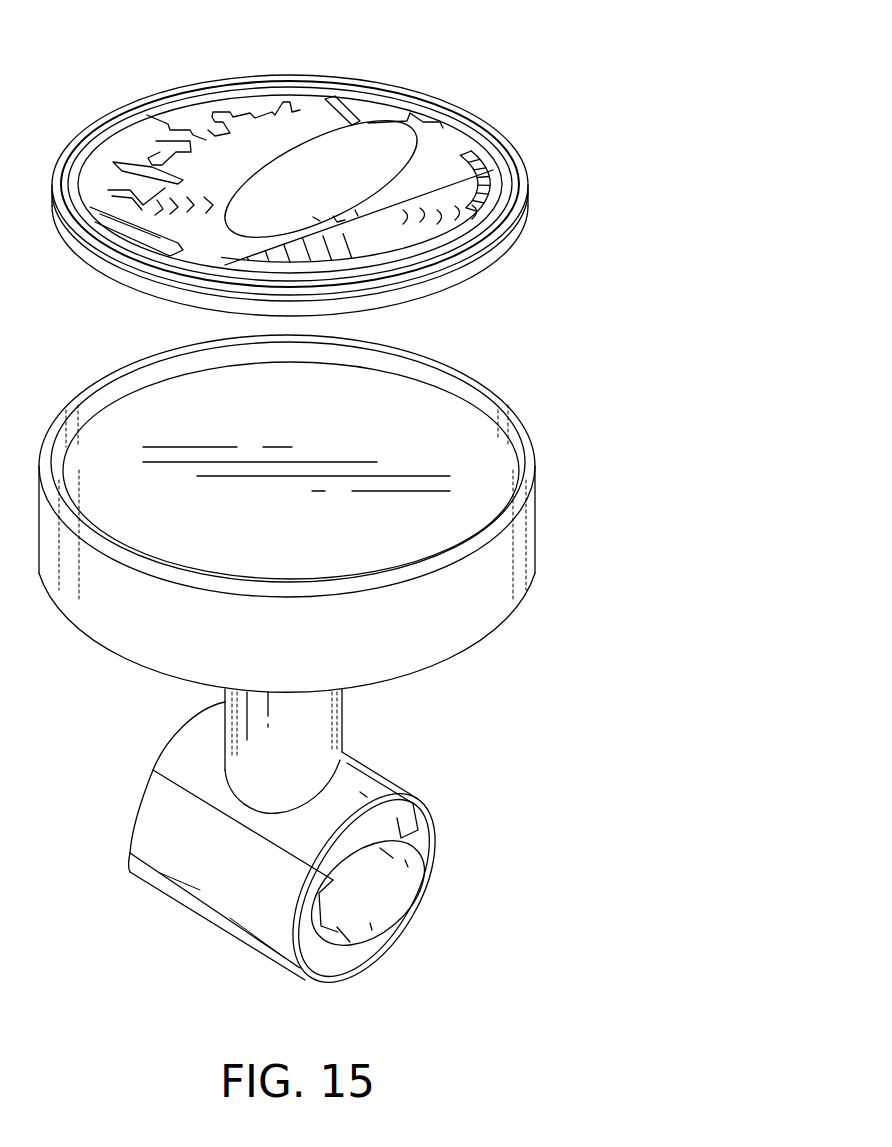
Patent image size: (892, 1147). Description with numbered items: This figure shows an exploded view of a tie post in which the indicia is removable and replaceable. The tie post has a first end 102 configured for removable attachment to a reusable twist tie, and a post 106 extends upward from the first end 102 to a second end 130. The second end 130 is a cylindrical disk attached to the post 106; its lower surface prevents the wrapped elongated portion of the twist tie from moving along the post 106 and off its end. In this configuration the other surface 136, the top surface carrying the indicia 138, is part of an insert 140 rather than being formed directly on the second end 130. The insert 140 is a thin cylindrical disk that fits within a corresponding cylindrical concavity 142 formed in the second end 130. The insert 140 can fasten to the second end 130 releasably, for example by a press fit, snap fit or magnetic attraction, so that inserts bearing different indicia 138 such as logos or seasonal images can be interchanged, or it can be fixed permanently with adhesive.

The first end 102 is at (450, 832).
The post 106 is at (343, 727).
The second end 130 is at (555, 521).
The other surface 136 is at (423, 100).
The indicia 138 is at (200, 128).
The insert 140 is at (526, 199).
The concavity 142 is at (477, 448).